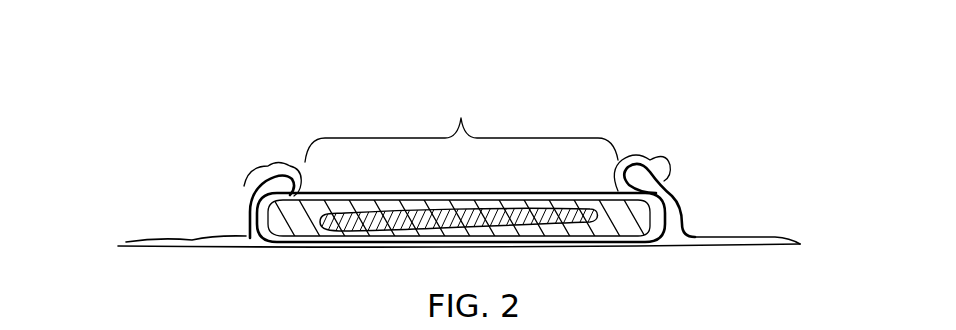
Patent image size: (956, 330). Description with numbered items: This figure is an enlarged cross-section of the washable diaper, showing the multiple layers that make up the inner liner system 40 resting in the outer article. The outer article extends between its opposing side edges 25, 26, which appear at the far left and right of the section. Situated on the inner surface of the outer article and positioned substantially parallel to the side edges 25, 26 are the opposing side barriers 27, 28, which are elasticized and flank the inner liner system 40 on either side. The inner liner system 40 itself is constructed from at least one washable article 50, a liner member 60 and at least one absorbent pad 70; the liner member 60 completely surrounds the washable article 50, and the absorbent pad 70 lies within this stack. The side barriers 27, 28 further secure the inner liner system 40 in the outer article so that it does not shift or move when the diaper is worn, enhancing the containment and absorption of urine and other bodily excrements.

The inner liner system 40 is at (461, 118).
The liner member 60 is at (498, 194).
The washable article 50 is at (601, 236).
The absorbent pad 70 is at (356, 229).
The side barrier 28 is at (246, 212).
The side barrier 27 is at (680, 196).
The side edge 26 is at (126, 243).
The side edge 25 is at (747, 238).